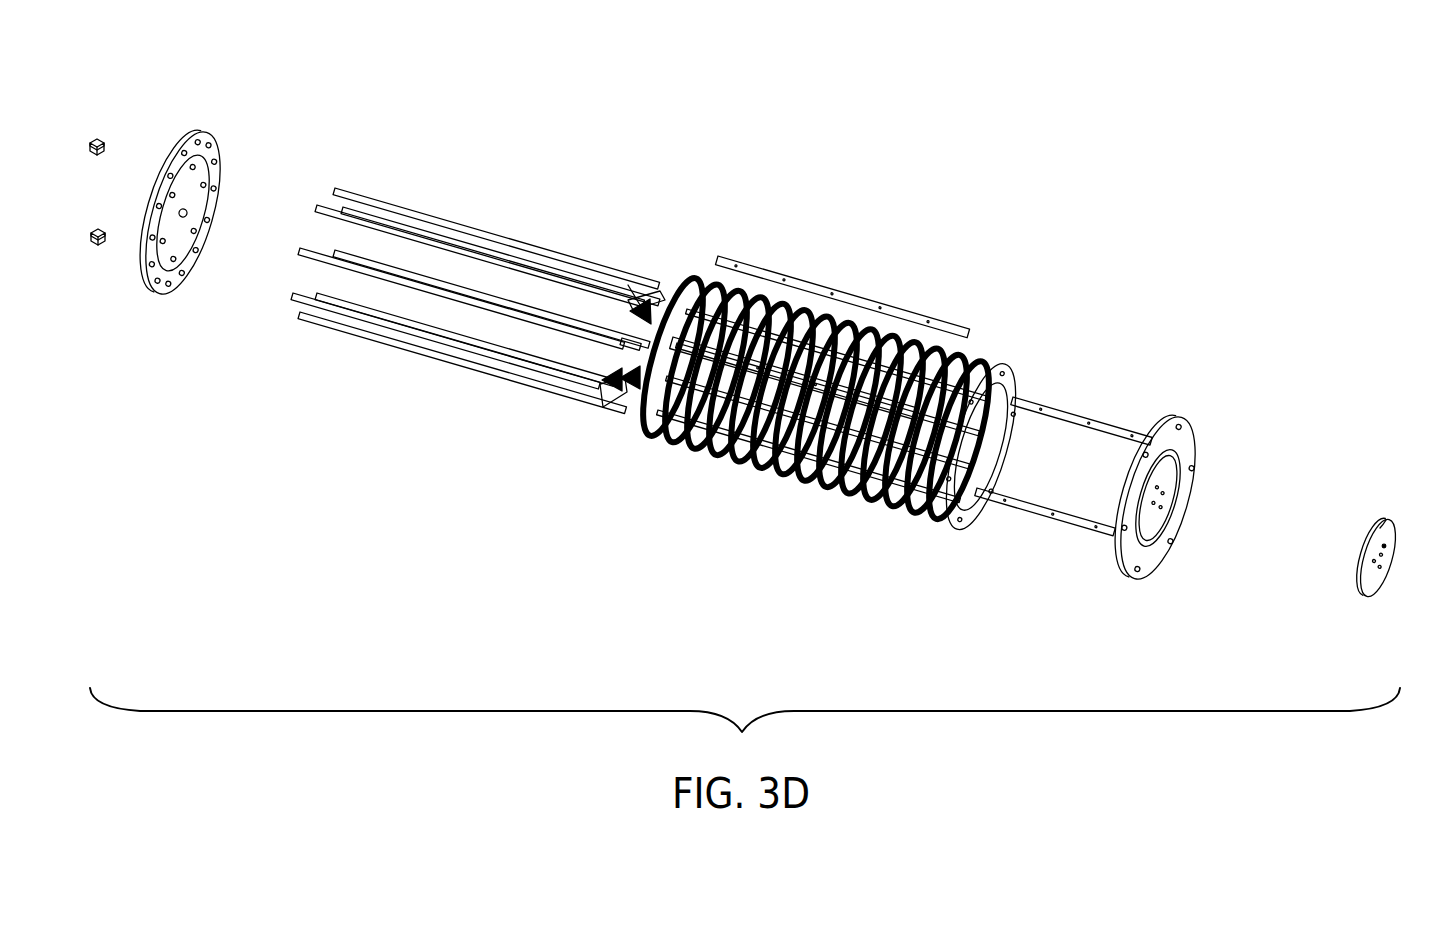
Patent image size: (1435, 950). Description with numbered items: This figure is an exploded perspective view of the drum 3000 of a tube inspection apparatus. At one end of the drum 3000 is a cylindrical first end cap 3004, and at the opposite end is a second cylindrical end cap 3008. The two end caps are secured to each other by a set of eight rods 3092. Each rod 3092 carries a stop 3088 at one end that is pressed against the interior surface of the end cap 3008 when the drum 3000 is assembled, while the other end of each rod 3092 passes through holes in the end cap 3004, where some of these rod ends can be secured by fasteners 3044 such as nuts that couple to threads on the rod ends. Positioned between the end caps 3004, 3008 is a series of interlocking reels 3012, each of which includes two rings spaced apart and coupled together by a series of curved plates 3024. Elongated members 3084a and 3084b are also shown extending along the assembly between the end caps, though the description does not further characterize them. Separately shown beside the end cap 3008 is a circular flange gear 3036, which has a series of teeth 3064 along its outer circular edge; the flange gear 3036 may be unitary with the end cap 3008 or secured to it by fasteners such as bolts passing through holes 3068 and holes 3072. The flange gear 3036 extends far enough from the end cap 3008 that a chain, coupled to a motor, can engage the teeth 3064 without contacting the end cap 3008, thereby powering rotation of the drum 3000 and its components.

The drum 3000 is at (637, 527).
The fasteners 3044 is at (94, 140).
The first end cap 3004 is at (198, 128).
The rods 3092 is at (405, 235).
The stop 3088 is at (648, 296).
The reel 3012 is at (770, 447).
The curved plates 3024 is at (785, 333).
The rail 3084a is at (880, 303).
The rail 3084b is at (1130, 435).
The second end cap 3008 is at (1178, 420).
The holes 3072 is at (1166, 498).
The flange gear 3036 is at (1366, 598).
The teeth 3064 is at (1380, 528).
The holes 3068 is at (1386, 546).